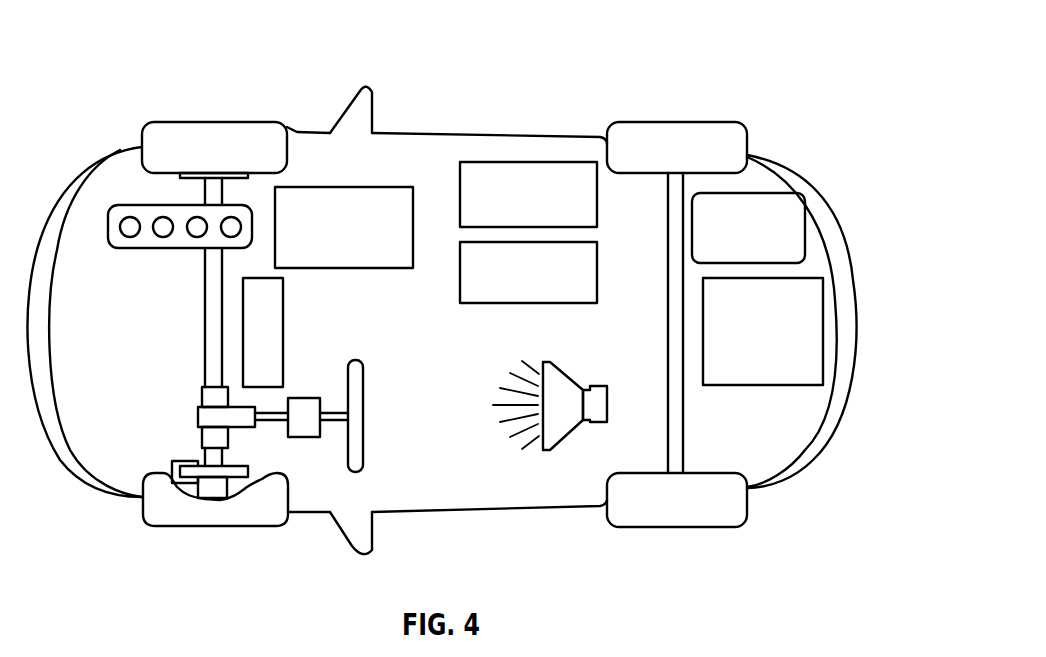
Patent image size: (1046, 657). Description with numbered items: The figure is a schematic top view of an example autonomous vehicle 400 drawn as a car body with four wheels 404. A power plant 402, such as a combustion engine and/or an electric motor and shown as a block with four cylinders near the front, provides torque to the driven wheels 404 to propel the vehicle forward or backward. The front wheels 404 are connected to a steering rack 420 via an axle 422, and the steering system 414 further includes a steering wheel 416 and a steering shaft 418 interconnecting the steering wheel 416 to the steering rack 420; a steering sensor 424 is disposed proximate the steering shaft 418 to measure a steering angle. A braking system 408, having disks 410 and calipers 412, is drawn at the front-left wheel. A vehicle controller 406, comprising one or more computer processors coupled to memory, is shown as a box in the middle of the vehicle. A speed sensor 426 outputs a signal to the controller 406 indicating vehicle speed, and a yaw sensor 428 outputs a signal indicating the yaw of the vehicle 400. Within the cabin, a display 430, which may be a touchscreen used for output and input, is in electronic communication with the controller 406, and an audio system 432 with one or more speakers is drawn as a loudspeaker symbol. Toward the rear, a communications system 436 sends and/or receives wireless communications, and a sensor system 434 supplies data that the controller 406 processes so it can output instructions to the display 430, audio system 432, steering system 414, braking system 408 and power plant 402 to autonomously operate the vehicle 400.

The autonomous vehicle 400 is at (118, 42).
The power plant 402 is at (145, 245).
The driven wheels 404 is at (173, 137).
The vehicle controller 406 is at (366, 259).
The braking system 408 is at (150, 447).
The disks 410 is at (197, 466).
The calipers 412 is at (138, 497).
The steering system 414 is at (294, 366).
The steering wheel 416 is at (364, 440).
The steering shaft 418 is at (333, 423).
The steering rack 420 is at (317, 398).
The axle 422 is at (223, 192).
The steering sensor 424 is at (202, 393).
The speed sensor 426 is at (460, 177).
The yaw sensor 428 is at (528, 305).
The display 430 is at (283, 302).
The audio system 432 is at (563, 390).
The sensor system 434 is at (770, 386).
The communications system 436 is at (807, 228).